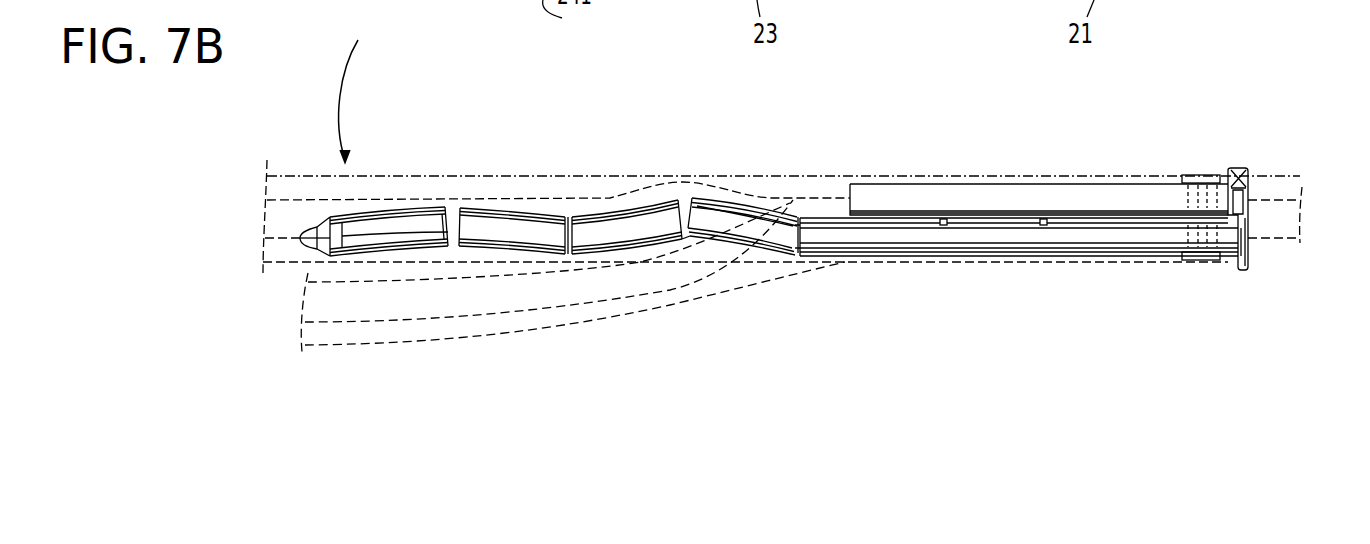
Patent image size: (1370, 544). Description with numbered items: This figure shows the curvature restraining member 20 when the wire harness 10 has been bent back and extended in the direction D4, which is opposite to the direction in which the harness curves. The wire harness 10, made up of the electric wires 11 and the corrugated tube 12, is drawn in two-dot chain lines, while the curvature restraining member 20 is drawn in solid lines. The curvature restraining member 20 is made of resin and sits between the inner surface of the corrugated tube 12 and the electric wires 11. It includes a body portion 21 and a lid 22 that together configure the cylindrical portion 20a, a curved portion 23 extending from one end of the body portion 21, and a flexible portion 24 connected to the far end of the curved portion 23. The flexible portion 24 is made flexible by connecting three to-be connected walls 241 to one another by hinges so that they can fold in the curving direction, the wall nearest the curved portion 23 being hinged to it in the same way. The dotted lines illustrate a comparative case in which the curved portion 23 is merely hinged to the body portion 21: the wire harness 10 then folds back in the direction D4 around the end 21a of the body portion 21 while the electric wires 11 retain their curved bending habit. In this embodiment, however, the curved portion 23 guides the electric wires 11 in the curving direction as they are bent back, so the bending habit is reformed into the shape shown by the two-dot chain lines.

The wire harness 10 is at (796, 176).
The electric wires 11 is at (620, 195).
The corrugated tube 12 is at (950, 180).
The curvature restraining member 20 is at (1258, 170).
The cylindrical portion 20a is at (1153, 180).
The body portion 21 is at (1105, 245).
The end of the body portion 21a is at (785, 263).
The lid 22 is at (1105, 190).
The curved portion 23 is at (757, 237).
The flexible portion 24 is at (607, 104).
The to-be connected walls 241 is at (399, 236).
The direction opposite from the curving direction D4 is at (340, 93).